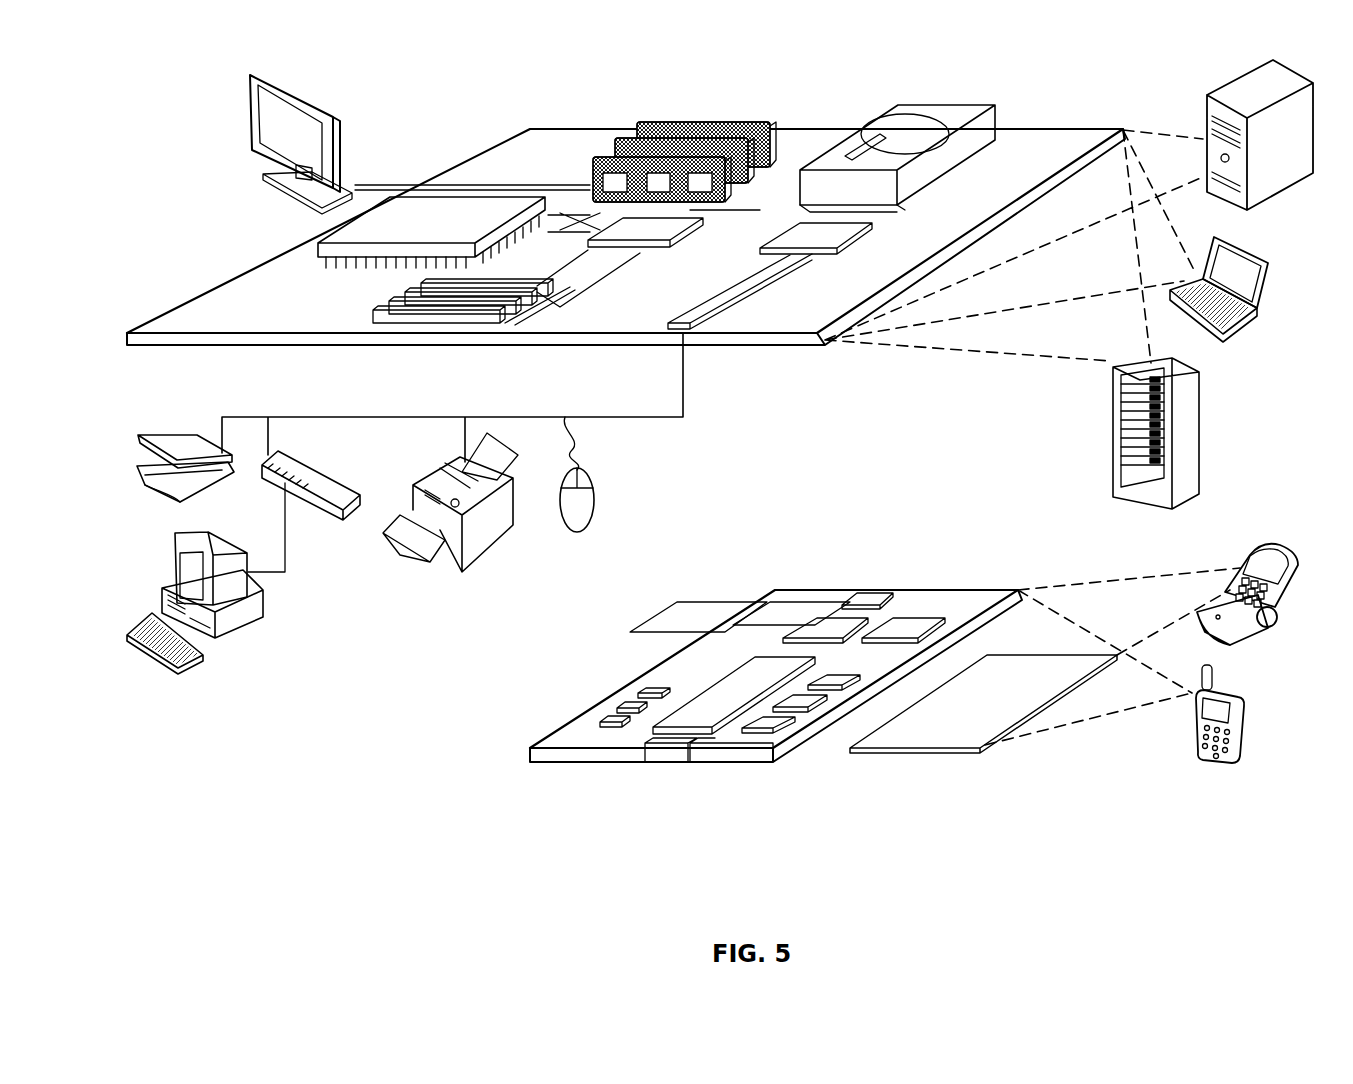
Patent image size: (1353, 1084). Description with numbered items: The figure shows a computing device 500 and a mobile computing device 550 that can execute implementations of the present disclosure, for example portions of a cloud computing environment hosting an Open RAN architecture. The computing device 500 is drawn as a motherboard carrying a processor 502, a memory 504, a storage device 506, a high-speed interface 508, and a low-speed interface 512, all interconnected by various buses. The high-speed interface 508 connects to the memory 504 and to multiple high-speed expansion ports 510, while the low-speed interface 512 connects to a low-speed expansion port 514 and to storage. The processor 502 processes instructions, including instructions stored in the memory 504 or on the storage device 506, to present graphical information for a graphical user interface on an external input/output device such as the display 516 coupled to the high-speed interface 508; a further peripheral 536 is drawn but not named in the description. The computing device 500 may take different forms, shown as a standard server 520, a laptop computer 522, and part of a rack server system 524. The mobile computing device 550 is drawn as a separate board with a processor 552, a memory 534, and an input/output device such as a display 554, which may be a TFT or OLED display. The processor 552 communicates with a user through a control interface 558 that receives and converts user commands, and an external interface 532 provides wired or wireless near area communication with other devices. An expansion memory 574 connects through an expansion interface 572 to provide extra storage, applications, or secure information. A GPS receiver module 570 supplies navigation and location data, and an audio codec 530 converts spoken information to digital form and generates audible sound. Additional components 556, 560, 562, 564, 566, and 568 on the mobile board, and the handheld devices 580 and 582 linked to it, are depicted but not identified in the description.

The computing device 500 is at (445, 103).
The processor 502 is at (320, 248).
The memory 504 is at (668, 128).
The storage device 506 is at (893, 108).
The high-speed interface 508 is at (622, 230).
The high-speed expansion ports 510 is at (395, 305).
The low-speed interface 512 is at (795, 233).
The low-speed expansion port 514 is at (690, 335).
The display 516 is at (257, 78).
The standard server 520 is at (1207, 112).
The laptop computer 522 is at (1268, 260).
The rack server system 524 is at (1113, 455).
The audio codec 530 is at (140, 470).
The external interface 532 is at (327, 513).
The memory 534 is at (488, 556).
The mouse 536 is at (597, 503).
The mobile computing device 550 is at (502, 762).
The processor 552 is at (705, 720).
The display 554 is at (943, 737).
The component chip 556 is at (777, 728).
The control interface 558 is at (803, 707).
The component chip 560 is at (835, 683).
The connector 562 is at (672, 755).
The discrete components 564 is at (606, 715).
The memory chip 566 is at (833, 627).
The memory chip 568 is at (903, 627).
The GPS receiver module 570 is at (867, 600).
The expansion interface 572 is at (757, 602).
The expansion memory 574 is at (680, 602).
The cellular phone 580 is at (1250, 543).
The mobile phone 582 is at (1193, 720).